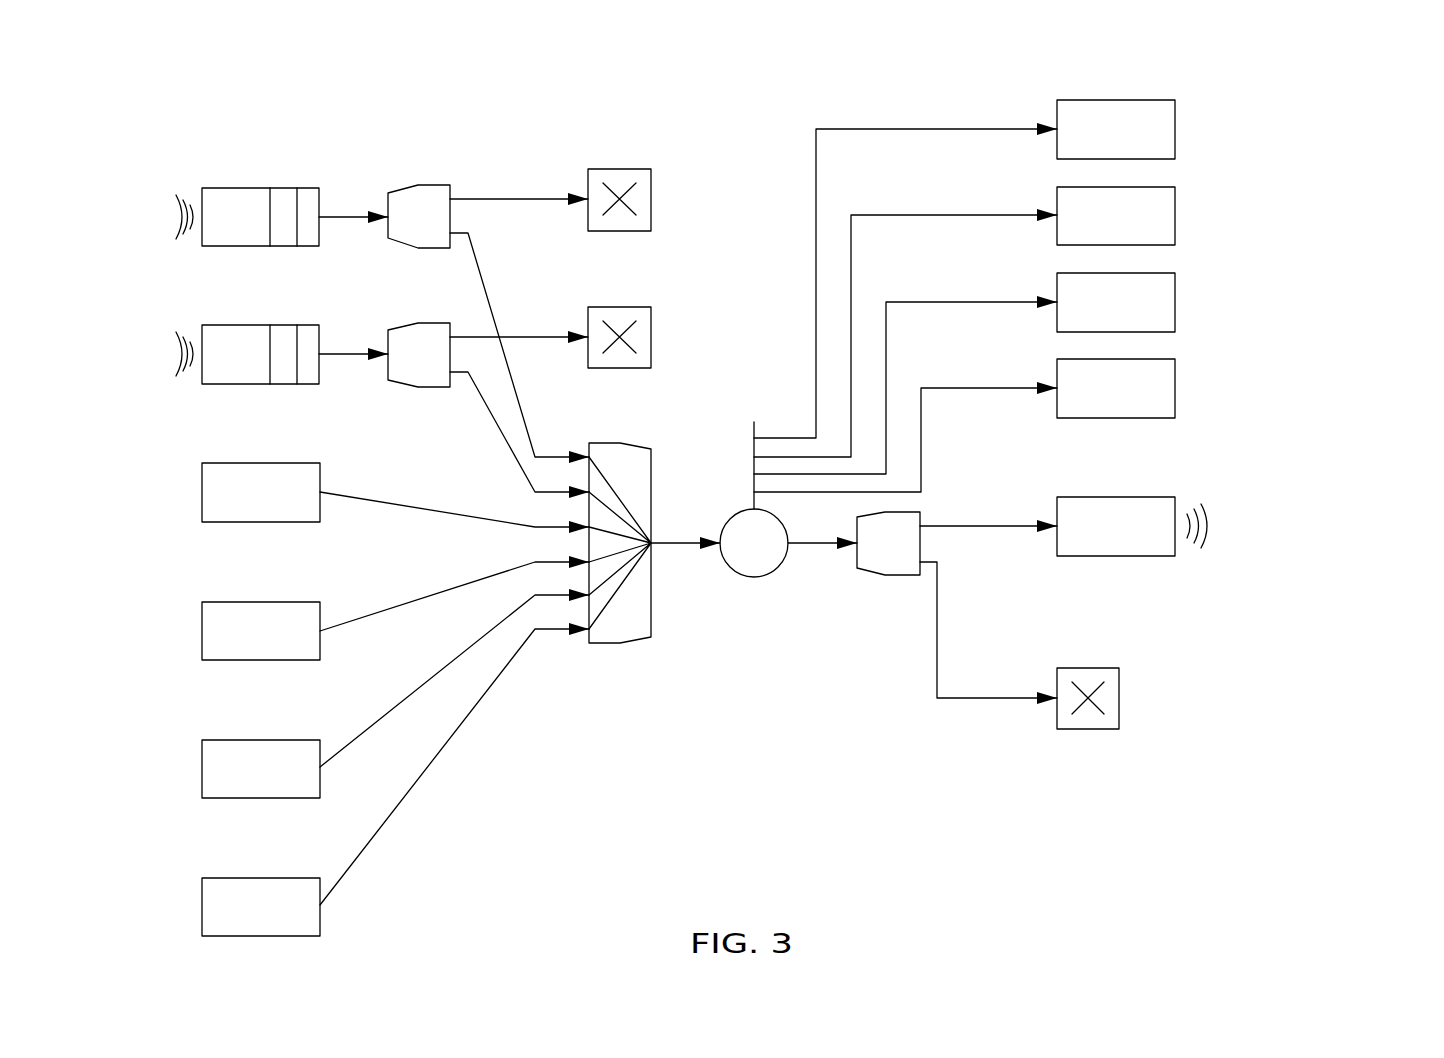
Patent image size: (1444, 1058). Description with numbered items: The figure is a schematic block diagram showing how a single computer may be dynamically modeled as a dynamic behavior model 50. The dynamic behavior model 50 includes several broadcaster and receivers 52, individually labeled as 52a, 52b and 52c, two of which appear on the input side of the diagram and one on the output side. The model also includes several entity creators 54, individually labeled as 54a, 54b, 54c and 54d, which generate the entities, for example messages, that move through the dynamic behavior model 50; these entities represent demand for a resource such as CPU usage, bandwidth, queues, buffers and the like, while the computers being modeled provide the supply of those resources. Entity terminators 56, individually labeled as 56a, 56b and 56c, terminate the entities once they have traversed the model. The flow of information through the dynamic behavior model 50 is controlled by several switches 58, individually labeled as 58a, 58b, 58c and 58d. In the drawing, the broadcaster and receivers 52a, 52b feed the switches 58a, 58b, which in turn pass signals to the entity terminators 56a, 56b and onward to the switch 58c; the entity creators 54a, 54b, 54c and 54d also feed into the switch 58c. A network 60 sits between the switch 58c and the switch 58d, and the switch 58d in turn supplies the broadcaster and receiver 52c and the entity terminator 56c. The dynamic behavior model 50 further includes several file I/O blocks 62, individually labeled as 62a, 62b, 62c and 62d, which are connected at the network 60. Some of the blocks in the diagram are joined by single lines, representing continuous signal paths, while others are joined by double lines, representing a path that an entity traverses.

The dynamic behavior model 50 is at (1346, 160).
The broadcaster and receivers 52 is at (150, 172).
The broadcaster and receiver 52a is at (264, 188).
The broadcaster and receiver 52b is at (264, 325).
The broadcaster and receiver 52c is at (1117, 497).
The entity creators 54 is at (150, 444).
The entity creator 54a is at (262, 463).
The entity creator 54b is at (262, 602).
The entity creator 54c is at (262, 740).
The entity creator 54d is at (262, 878).
The entity terminators 56 is at (573, 112).
The entity terminator 56a is at (622, 169).
The entity terminator 56b is at (620, 307).
The entity terminator 56c is at (1088, 668).
The switches 58 is at (380, 112).
The switch 58a is at (420, 193).
The switch 58b is at (418, 387).
The switch 58c is at (620, 643).
The switch 58d is at (885, 575).
The network 60 is at (754, 577).
The file I/O blocks 62 is at (1200, 88).
The file I/O block 62a is at (1175, 129).
The file I/O block 62b is at (1175, 215).
The file I/O block 62c is at (1175, 302).
The file I/O block 62d is at (1175, 388).